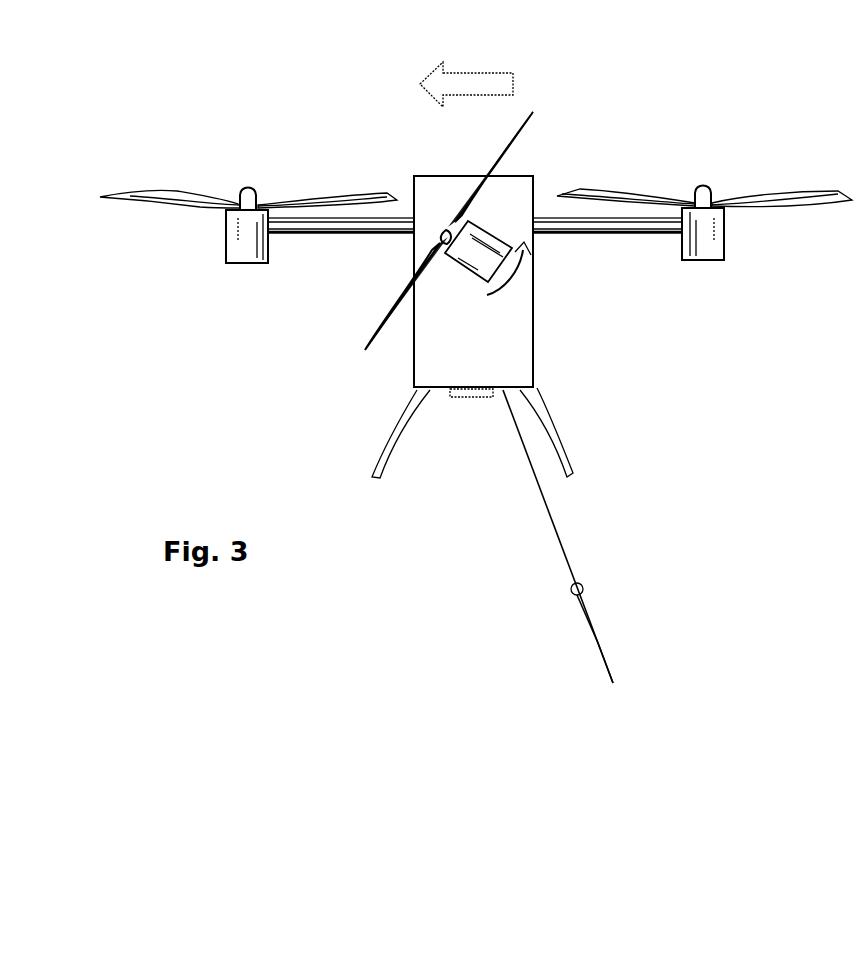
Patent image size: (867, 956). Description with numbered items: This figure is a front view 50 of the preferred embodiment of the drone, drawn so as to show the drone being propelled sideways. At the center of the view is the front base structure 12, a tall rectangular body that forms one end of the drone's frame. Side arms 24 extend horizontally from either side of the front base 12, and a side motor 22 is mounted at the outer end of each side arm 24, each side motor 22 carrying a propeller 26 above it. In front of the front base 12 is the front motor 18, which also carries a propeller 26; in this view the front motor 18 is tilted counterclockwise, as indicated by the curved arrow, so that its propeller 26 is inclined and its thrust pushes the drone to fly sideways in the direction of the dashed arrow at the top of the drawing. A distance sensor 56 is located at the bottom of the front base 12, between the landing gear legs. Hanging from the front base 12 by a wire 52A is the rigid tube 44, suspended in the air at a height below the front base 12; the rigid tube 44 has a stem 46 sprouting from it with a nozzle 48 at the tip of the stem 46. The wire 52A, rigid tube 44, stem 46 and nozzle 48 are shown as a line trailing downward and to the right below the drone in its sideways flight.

The front view 50 is at (293, 110).
The front base structure 12 is at (529, 175).
The side arms 24 is at (323, 233).
The side motors 22 is at (226, 247).
The propeller 26 is at (182, 193).
The front motor 18 is at (473, 280).
The distance sensor 56 is at (475, 397).
The wire 52A is at (553, 540).
The rigid tube 44 is at (585, 589).
The stem 46 is at (598, 643).
The nozzle 48 is at (613, 682).